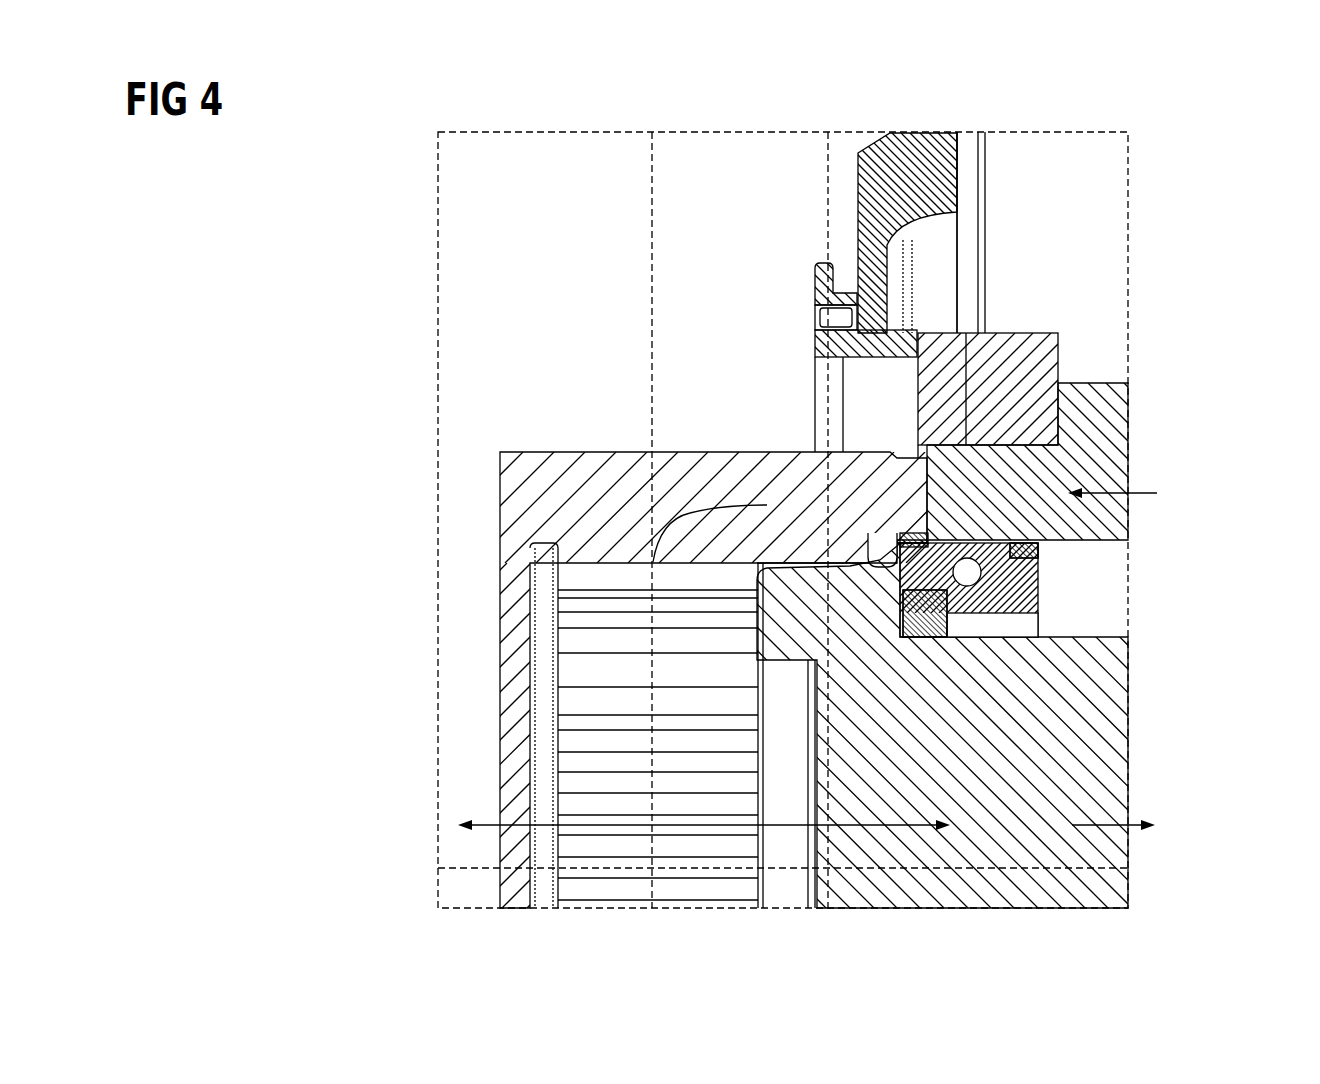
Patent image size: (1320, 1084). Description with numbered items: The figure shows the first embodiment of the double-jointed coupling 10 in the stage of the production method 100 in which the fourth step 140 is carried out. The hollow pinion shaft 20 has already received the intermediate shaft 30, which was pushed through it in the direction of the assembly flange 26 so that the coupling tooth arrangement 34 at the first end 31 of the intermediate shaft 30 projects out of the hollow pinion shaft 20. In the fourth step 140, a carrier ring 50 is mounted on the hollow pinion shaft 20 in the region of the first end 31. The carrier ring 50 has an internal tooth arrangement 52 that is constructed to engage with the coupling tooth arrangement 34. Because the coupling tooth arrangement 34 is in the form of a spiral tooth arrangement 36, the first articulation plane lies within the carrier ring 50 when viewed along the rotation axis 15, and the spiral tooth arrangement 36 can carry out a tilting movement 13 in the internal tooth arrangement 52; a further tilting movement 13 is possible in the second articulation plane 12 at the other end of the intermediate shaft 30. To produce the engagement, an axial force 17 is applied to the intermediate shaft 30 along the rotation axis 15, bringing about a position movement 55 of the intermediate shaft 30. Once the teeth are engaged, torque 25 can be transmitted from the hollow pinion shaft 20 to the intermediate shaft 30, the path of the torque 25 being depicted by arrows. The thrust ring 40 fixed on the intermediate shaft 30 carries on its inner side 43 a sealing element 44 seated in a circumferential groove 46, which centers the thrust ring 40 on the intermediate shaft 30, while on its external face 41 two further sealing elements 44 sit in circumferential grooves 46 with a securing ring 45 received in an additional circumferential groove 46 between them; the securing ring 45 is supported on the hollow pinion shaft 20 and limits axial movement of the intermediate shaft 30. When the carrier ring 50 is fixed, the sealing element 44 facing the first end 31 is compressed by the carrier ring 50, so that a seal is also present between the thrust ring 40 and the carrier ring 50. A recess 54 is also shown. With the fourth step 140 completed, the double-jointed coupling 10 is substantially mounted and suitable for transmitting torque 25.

The method 100 is at (405, 322).
The fourth step 140 is at (412, 503).
The double-jointed coupling 10 is at (553, 288).
The second articulation plane 12 is at (652, 205).
The tilting movement 13 is at (620, 170).
The assembly flange 26 is at (815, 297).
The hollow pinion shaft 20 is at (1110, 423).
The external face 41 is at (995, 542).
The securing ring 45 is at (935, 530).
The carrier ring 50 is at (588, 500).
The housing recess 54 is at (870, 537).
The internal tooth arrangement 52 is at (613, 607).
The position movement 55 is at (492, 822).
The axial force 17 is at (438, 728).
The rotation axis 15 is at (457, 868).
The torque 25 is at (688, 512).
The coupling tooth arrangement 34 is at (817, 560).
The spiral tooth arrangement 36 is at (750, 469).
The intermediate shaft 30 is at (1072, 860).
The first end 31 is at (815, 705).
The thrust ring 40 is at (1040, 580).
The inner side 43 is at (1040, 620).
The sealing element 44 is at (910, 535).
The circumferential groove 46 is at (1025, 550).